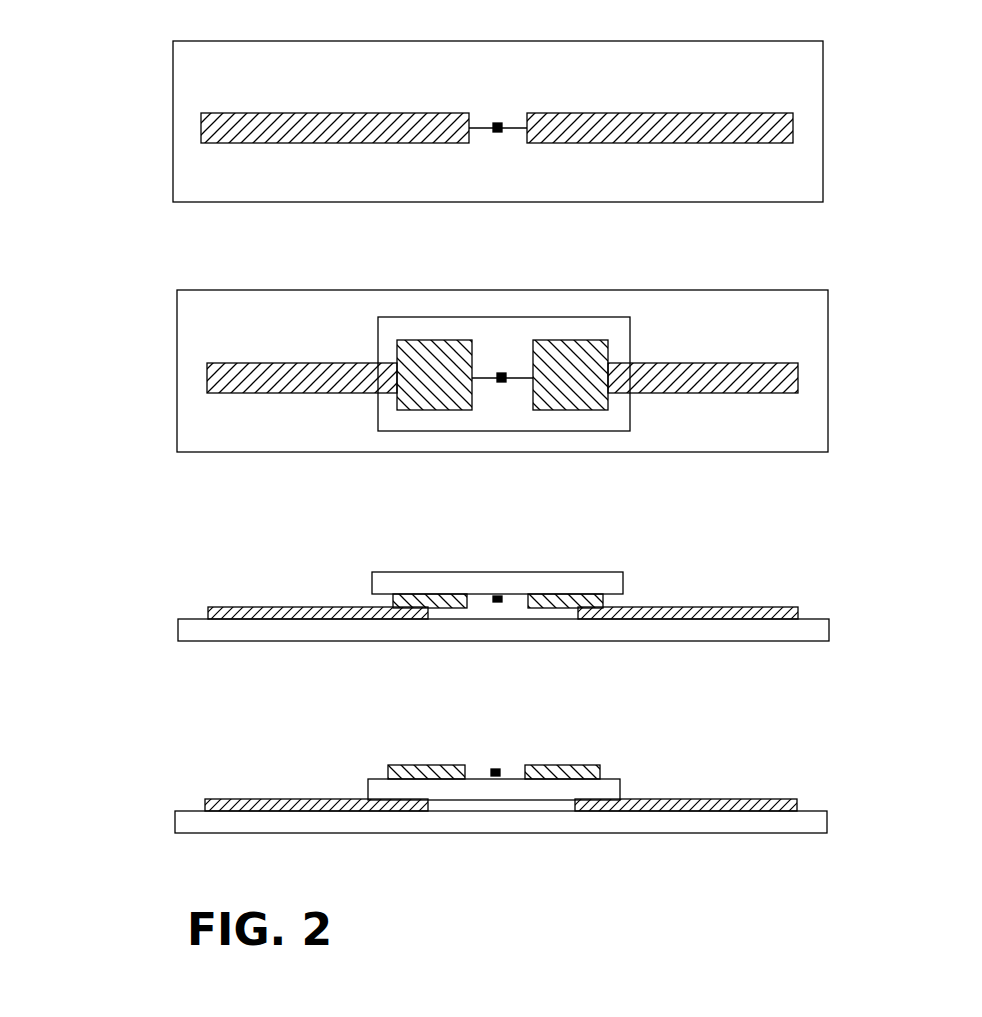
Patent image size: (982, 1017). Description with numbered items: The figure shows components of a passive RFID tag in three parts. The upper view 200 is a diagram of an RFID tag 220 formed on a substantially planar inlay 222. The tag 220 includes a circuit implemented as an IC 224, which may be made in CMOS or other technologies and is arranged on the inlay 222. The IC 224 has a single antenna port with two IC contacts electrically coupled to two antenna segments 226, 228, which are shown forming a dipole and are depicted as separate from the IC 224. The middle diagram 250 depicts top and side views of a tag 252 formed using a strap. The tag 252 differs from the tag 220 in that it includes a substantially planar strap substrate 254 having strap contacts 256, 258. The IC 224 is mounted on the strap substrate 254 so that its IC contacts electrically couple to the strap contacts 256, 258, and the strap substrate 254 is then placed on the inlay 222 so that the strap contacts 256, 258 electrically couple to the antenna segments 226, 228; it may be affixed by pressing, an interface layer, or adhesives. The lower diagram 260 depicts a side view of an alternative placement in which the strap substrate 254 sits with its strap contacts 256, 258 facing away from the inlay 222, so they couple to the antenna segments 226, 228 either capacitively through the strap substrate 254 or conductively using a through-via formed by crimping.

The first processing stage (sensor layer before bonding) 200 is at (26, 30).
The RFID tag 220 is at (172, 114).
The inlay 222 is at (807, 80).
The IC 224 is at (498, 122).
The antenna segment 226 is at (366, 127).
The antenna segment 228 is at (646, 127).
The diagram 250 is at (19, 303).
The tag 252 is at (177, 452).
The strap substrate 254 is at (391, 422).
The strap contact 256 is at (438, 408).
The strap contact 258 is at (588, 406).
The diagram 260 is at (22, 790).